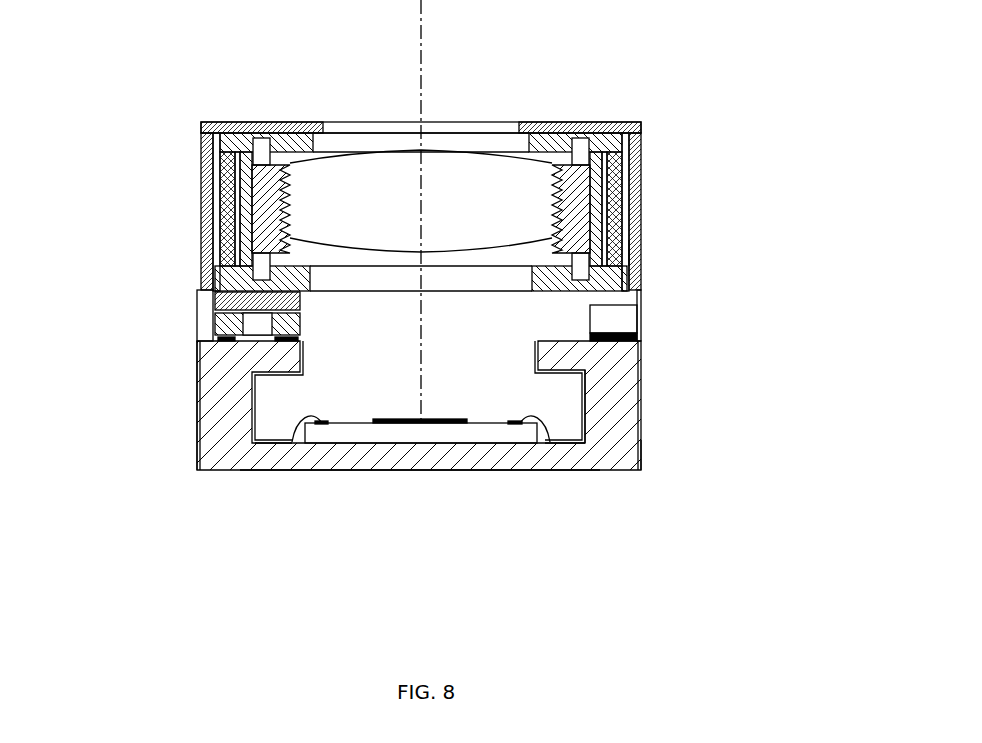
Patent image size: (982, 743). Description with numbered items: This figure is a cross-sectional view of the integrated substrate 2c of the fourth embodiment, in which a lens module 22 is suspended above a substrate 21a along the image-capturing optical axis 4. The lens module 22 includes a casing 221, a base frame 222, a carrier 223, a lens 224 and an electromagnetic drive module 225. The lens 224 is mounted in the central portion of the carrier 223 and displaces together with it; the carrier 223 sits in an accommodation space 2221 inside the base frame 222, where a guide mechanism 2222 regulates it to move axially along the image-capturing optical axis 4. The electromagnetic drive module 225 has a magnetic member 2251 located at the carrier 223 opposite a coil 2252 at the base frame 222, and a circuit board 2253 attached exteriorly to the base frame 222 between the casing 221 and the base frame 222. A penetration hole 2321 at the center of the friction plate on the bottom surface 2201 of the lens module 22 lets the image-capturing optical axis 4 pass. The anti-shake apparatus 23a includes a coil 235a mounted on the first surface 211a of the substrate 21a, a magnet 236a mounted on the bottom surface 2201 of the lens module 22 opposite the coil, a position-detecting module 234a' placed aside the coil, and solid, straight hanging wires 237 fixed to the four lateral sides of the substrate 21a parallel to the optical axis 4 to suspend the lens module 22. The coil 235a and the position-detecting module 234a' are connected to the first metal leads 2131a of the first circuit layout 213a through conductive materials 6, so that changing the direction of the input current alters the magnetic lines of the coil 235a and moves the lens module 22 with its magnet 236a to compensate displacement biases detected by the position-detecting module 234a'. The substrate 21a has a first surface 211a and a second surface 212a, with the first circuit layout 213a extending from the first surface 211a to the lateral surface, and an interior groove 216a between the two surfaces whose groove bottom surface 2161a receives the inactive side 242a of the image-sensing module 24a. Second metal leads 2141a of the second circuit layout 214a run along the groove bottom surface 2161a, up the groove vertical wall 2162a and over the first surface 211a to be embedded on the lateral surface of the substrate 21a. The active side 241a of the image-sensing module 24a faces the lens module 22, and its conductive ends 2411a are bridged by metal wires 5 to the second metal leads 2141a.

The integrated substrate 2c is at (684, 100).
The image-capturing optical axis 4 is at (421, 60).
The lens module 22 is at (84, 2).
The casing 221 is at (230, 124).
The base frame 222 is at (227, 140).
The accommodation space 2221 is at (536, 160).
The guide mechanism 2222 is at (262, 140).
The carrier 223 is at (221, 195).
The lens 224 is at (367, 168).
The electromagnetic drive module 225 is at (135, 113).
The magnetic member 2251 is at (225, 165).
The coil 2252 is at (235, 190).
The circuit board 2253 is at (245, 212).
The bottom surface of the lens module 2201 is at (205, 266).
The penetration hole 2321 is at (367, 297).
The anti-shake apparatus 23a is at (765, 173).
The position-detecting module 234a' is at (679, 304).
The coil 235a is at (623, 270).
The magnet 236a is at (638, 252).
The hanging wires 237 is at (197, 312).
The electric conductive material 6 is at (215, 339).
The substrate 21a is at (617, 387).
The first surface 211a is at (198, 362).
The second surface 212a is at (288, 470).
The first circuit layout 213a is at (186, 420).
The first metal leads 2131a is at (197, 447).
The second circuit layout 214a is at (275, 445).
The second metal leads 2141a is at (275, 380).
The interior groove 216a is at (587, 450).
The groove bottom surface 2161a is at (546, 443).
The groove vertical wall 2162a is at (640, 466).
The image-sensing module 24a is at (393, 437).
The active side 241a is at (517, 427).
The conductive ends 2411a is at (540, 443).
The inactive side 242a is at (465, 425).
The metal wires 5 is at (305, 443).